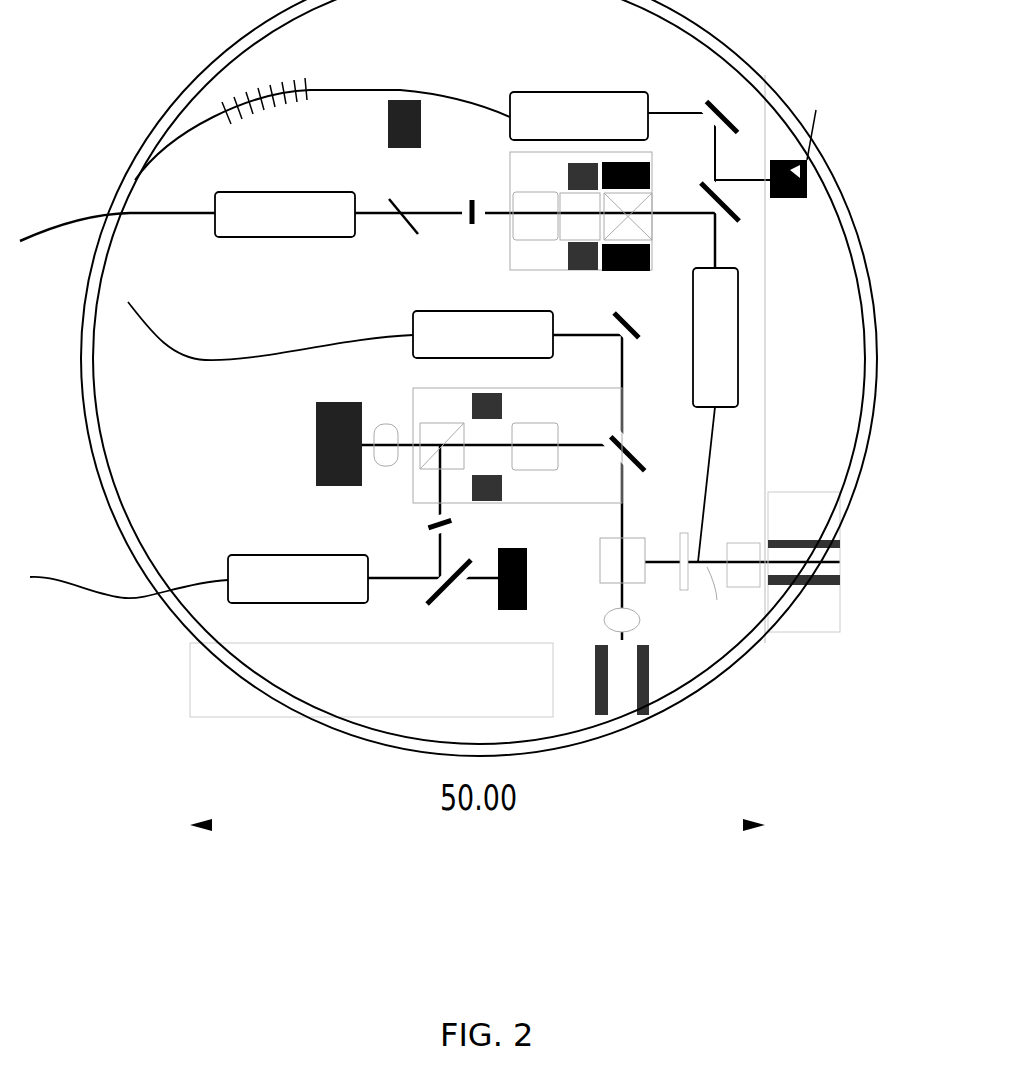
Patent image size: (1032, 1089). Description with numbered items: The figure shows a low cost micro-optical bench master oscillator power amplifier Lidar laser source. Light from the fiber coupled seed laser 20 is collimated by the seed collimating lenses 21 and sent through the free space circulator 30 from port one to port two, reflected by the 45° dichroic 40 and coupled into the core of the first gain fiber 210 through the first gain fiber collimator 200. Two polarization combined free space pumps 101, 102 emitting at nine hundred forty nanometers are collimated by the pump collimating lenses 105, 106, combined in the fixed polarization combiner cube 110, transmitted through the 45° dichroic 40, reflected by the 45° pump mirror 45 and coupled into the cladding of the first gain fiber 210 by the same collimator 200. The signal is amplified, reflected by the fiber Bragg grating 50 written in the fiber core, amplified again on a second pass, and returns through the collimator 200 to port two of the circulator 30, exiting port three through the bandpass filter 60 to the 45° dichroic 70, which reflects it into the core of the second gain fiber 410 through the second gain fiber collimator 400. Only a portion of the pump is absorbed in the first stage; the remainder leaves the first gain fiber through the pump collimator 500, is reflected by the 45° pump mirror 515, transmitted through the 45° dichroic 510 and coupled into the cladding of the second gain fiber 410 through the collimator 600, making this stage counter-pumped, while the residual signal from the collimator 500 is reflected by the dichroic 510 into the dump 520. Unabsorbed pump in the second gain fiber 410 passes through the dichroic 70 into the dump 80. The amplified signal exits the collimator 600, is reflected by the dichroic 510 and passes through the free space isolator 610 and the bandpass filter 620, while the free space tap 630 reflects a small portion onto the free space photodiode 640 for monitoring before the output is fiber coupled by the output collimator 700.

The fiber coupled seed laser 20 is at (312, 444).
The seed collimating lenses 21 is at (391, 464).
The free space circulator 30 is at (517, 444).
The 45° dichroic 40 is at (628, 453).
The 45° pump mirror 45 is at (627, 336).
The fiber Bragg grating 50 is at (322, 129).
The bandpass filter 60 is at (450, 526).
The 45° dichroic 70 is at (436, 595).
The pump dump 80 is at (512, 596).
The free space pump 101 is at (419, 680).
The free space pump 102 is at (804, 583).
The pump collimating lens 105 is at (652, 623).
The pump collimating lens 106 is at (724, 553).
The polarization combiner cube 110 is at (597, 560).
The first gain fiber collimator 200 is at (483, 334).
The first gain fiber 210 is at (112, 214).
The second gain fiber collimator 400 is at (298, 579).
The second gain fiber 410 is at (395, 517).
The pump collimator 500 is at (579, 116).
The 45° dichroic 510 is at (792, 208).
The 45° pump mirror 515 is at (767, 78).
The signal dump 520 is at (816, 110).
The second gain fiber pump collimator 600 is at (715, 337).
The free space isolator 610 is at (571, 220).
The bandpass filter 620 is at (470, 234).
The free space tap 630 is at (408, 249).
The free space photodiode 640 is at (410, 100).
The output collimator 700 is at (285, 214).